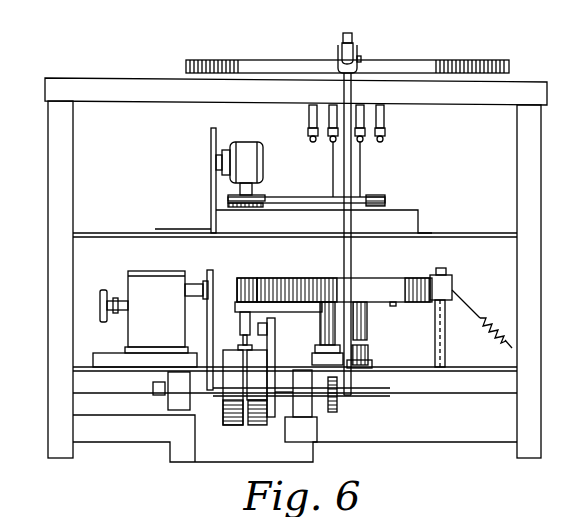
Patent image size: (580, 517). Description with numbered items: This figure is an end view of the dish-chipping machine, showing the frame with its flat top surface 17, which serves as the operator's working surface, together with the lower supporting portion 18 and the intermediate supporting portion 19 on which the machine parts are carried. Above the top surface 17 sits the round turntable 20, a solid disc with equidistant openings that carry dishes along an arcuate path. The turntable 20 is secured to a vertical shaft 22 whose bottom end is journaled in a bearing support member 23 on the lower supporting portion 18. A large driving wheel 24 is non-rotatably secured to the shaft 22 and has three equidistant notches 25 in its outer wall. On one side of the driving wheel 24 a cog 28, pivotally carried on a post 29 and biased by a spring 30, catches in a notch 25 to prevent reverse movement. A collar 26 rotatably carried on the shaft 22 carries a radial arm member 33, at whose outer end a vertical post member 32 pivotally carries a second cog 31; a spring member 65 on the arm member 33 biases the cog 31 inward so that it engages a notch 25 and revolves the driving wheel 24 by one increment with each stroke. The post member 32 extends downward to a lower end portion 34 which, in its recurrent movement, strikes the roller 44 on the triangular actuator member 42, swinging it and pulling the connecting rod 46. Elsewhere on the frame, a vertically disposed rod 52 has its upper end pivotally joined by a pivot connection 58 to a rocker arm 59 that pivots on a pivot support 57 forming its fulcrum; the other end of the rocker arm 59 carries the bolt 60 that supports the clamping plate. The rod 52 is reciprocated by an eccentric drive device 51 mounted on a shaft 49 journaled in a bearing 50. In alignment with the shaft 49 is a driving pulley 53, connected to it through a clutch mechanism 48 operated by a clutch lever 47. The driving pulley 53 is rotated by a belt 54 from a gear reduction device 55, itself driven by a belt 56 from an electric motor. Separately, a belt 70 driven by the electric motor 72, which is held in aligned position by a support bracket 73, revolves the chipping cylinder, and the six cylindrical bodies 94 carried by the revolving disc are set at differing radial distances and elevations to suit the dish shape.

The top surface 17 is at (127, 78).
The lower supporting portion 18 is at (478, 367).
The intermediate supporting portion 19 is at (103, 233).
The turntable 20 is at (490, 60).
The shaft 22 is at (363, 272).
The bearing support member 23 is at (368, 348).
The driving wheel 24 is at (395, 300).
The notches 25 is at (428, 302).
The collar 26 is at (367, 313).
The cog 28 is at (453, 283).
The post 29 is at (446, 345).
The spring 30 is at (486, 316).
The cog 31 is at (258, 285).
The post member 32 is at (237, 292).
The arm member 33 is at (300, 295).
The lower end portion 34 is at (240, 325).
The actuator member 42 is at (257, 375).
The roller 44 is at (240, 341).
The connecting rod 46 is at (272, 320).
The clutch lever 47 is at (268, 330).
The clutch mechanism 48 is at (258, 425).
The shaft 49 is at (285, 386).
The bearing 50 is at (303, 417).
The eccentric drive device 51 is at (338, 412).
The rod 52 is at (352, 96).
The driving pulley 53 is at (226, 420).
The belt 54 is at (207, 319).
The gear reduction device 55 is at (128, 329).
The belt 56 is at (104, 290).
The pivot support 57 is at (338, 55).
The pivot connection 58 is at (361, 59).
The rocker arm 59 is at (356, 48).
The bolt 60 is at (354, 35).
The spring member 65 is at (236, 306).
The belt 70 is at (308, 197).
The electric motor 72 is at (265, 160).
The support bracket 73 is at (210, 196).
The cylindrical bodies 94 is at (308, 120).